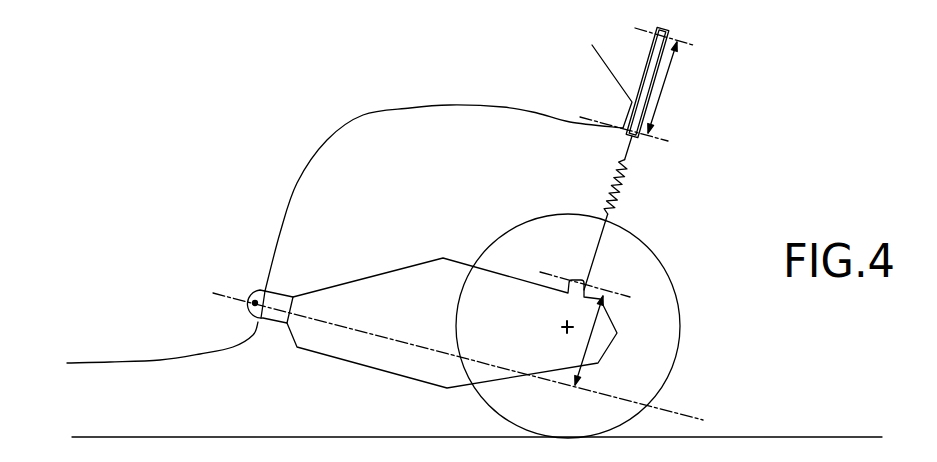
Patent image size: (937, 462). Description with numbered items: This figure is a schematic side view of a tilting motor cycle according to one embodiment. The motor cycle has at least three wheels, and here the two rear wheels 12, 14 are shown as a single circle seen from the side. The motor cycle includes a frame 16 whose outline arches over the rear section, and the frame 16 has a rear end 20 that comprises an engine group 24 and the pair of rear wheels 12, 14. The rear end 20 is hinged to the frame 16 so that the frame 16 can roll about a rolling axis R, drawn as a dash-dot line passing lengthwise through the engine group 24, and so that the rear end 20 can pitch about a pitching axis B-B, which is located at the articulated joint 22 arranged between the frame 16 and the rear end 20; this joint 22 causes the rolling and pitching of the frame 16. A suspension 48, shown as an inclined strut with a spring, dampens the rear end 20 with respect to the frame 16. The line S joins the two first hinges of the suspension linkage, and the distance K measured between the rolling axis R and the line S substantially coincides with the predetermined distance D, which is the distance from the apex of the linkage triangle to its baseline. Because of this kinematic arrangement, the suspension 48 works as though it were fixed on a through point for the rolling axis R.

The rear wheel 12 is at (635, 326).
The rear wheel 14 is at (603, 415).
The frame 16 is at (410, 112).
The rear end 20 is at (192, 380).
The articulated joint 22 is at (262, 322).
The engine group 24 is at (367, 350).
The suspension 48 is at (592, 186).
The pitching axis B-B is at (258, 288).
The rolling axis R is at (458, 356).
The line joining the first hinges S is at (610, 292).
The distance K is at (617, 332).
The predetermined distance D is at (663, 87).